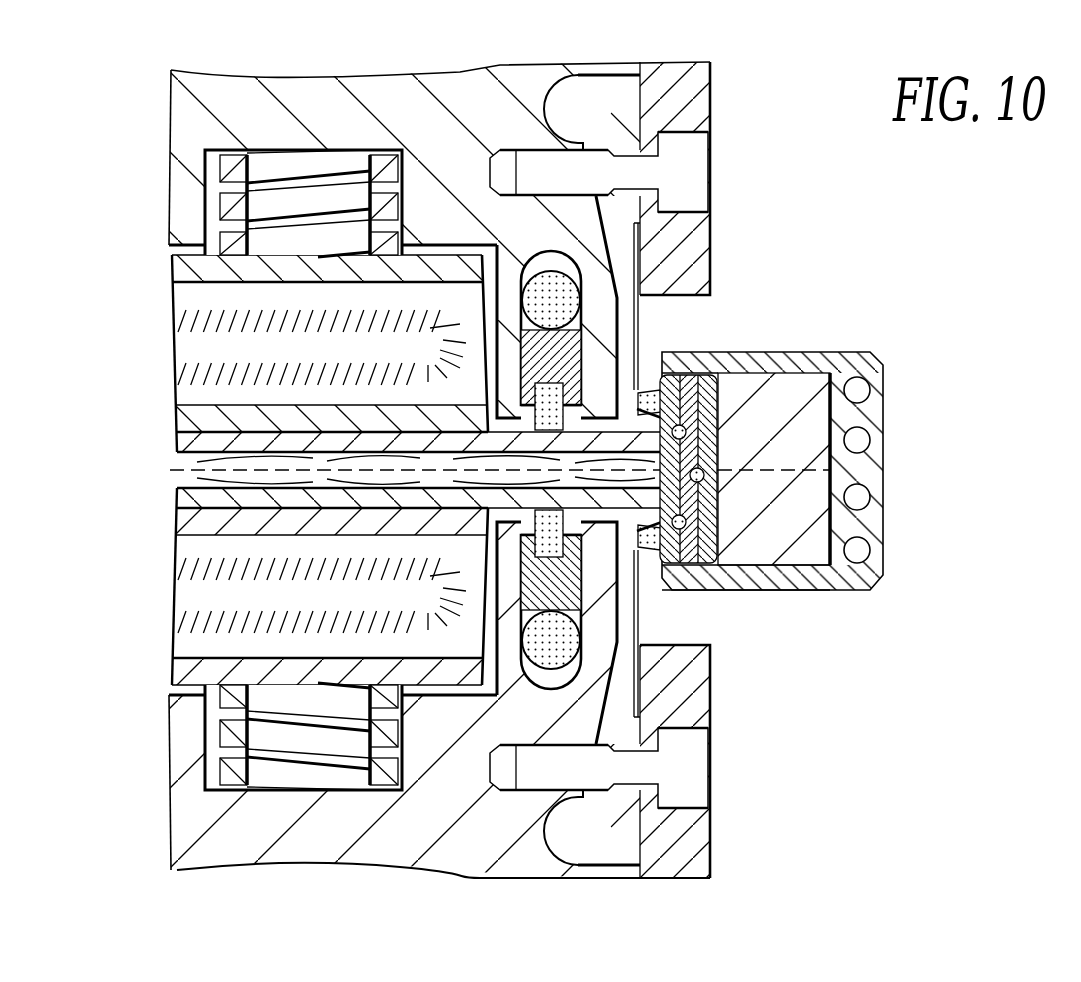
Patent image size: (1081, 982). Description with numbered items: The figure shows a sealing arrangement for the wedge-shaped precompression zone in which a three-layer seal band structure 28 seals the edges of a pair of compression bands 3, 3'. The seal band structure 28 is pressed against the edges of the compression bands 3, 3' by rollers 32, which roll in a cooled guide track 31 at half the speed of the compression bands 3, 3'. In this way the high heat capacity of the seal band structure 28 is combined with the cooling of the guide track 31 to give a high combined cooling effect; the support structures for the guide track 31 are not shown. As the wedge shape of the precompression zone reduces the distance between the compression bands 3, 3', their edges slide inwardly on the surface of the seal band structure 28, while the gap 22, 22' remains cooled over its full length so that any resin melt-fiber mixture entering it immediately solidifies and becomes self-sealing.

The compression band 3 is at (655, 331).
The compression band 3' is at (671, 619).
The gap 22 is at (712, 375).
The gap 22' is at (728, 563).
The seal band structure 28 is at (753, 458).
The guide track 31 is at (862, 418).
The rollers 32 is at (800, 530).